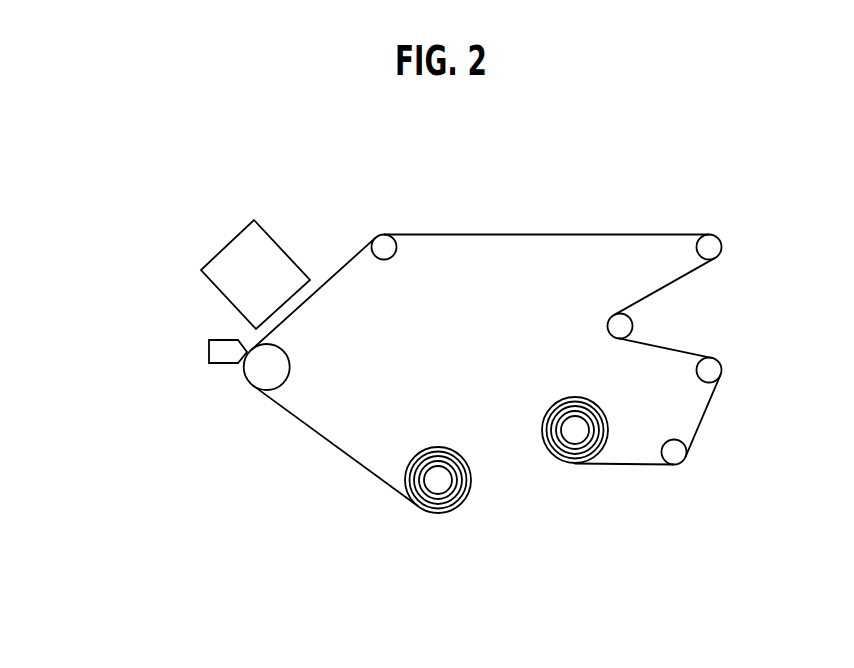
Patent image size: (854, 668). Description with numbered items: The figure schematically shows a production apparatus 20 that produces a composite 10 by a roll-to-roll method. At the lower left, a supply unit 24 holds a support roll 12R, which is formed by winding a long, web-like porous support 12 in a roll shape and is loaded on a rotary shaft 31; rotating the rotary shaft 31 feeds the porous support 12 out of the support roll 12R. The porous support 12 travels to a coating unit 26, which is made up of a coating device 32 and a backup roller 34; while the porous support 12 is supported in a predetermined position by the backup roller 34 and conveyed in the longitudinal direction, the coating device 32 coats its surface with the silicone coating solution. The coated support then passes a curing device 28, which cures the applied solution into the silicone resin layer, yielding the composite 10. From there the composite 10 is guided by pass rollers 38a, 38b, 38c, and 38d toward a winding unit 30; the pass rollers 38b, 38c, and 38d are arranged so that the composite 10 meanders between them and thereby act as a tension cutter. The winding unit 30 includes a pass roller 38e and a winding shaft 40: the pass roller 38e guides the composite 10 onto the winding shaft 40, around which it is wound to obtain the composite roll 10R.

The production apparatus 20 is at (705, 160).
The composite 10 is at (530, 233).
The composite roll 10R is at (558, 463).
The porous support 12 is at (333, 452).
The support roll 12R is at (452, 515).
The supply unit 24 is at (443, 432).
The coating unit 26 is at (227, 387).
The curing device 28 is at (237, 253).
The winding unit 30 is at (558, 393).
The rotary shaft 31 is at (438, 480).
The coating device 32 is at (227, 353).
The backup roller 34 is at (280, 370).
The pass roller 38a is at (385, 243).
The pass roller 38b is at (710, 247).
The pass roller 38c is at (620, 326).
The pass roller 38d is at (709, 370).
The pass roller 38e is at (677, 455).
The winding shaft 40 is at (575, 430).